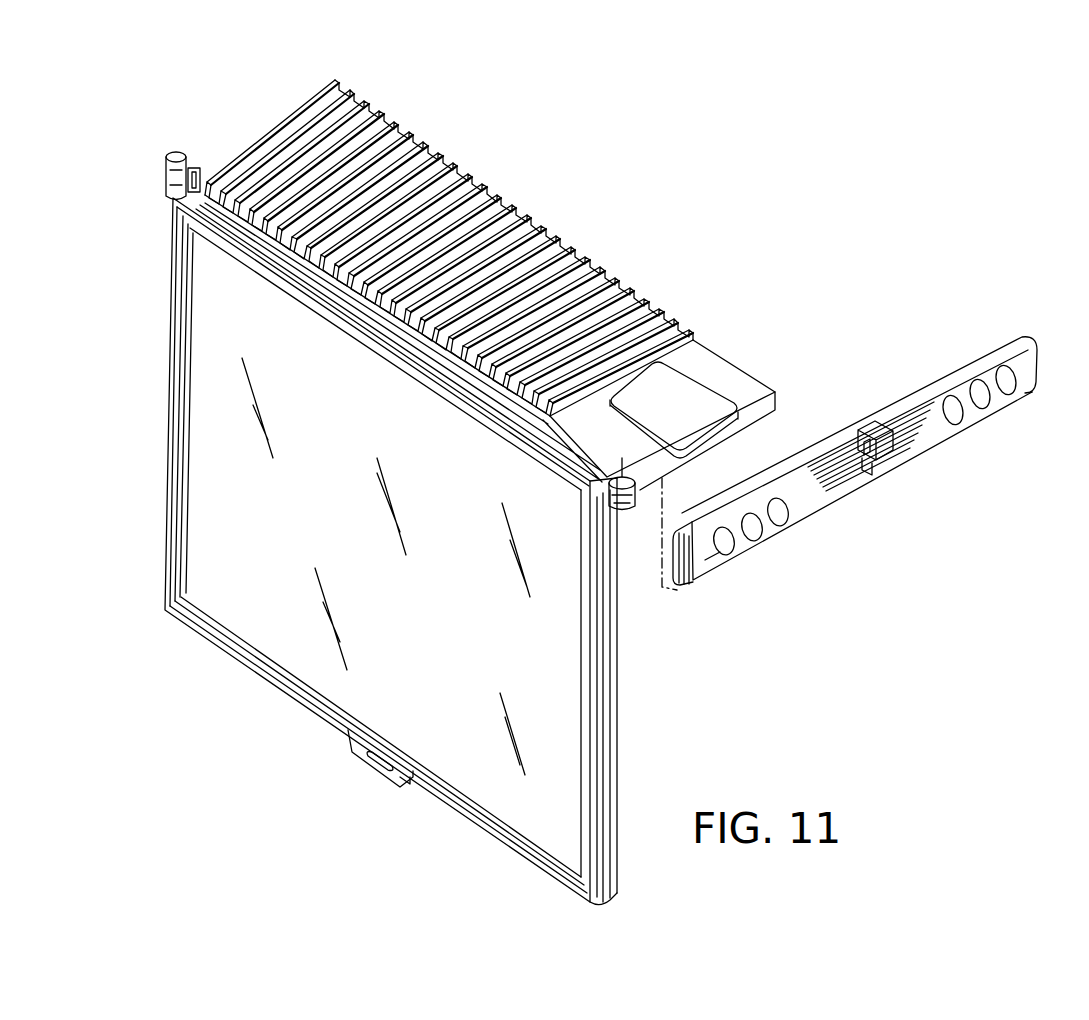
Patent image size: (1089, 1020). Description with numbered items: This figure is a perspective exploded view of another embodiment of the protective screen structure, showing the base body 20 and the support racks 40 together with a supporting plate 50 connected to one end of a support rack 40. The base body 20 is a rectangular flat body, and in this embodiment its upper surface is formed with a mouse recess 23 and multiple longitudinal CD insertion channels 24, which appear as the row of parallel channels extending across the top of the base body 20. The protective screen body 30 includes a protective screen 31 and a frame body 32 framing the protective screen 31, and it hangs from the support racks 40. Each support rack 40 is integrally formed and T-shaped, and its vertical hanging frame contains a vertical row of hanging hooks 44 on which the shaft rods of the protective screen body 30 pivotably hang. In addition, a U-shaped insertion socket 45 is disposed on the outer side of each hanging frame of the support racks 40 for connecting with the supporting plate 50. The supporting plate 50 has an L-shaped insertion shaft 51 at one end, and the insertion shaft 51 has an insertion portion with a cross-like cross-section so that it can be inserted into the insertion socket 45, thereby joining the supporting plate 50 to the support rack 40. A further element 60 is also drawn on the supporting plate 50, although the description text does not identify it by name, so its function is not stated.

The base body 20 is at (737, 372).
The mouse recess 23 is at (682, 398).
The CD insertion channels 24 is at (560, 243).
The protective screen body 30 is at (340, 815).
The protective screen 31 is at (300, 702).
The frame body 32 is at (285, 636).
The support rack 40 is at (175, 197).
The hanging hooks 44 is at (190, 175).
The U-shaped insertion socket 45 is at (163, 176).
The supporting plate 50 is at (975, 368).
The insertion shaft 51 is at (688, 545).
The clip 60 is at (862, 430).